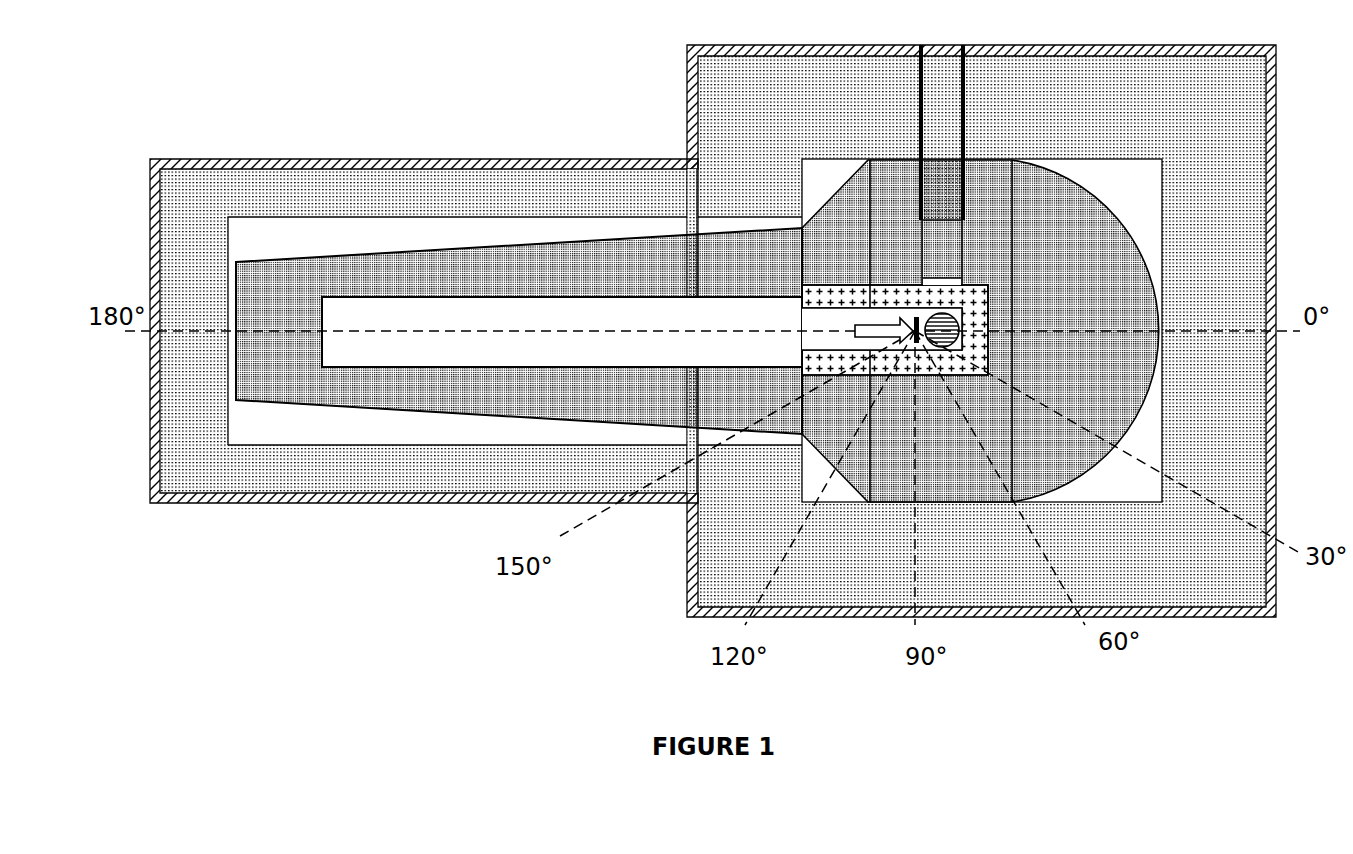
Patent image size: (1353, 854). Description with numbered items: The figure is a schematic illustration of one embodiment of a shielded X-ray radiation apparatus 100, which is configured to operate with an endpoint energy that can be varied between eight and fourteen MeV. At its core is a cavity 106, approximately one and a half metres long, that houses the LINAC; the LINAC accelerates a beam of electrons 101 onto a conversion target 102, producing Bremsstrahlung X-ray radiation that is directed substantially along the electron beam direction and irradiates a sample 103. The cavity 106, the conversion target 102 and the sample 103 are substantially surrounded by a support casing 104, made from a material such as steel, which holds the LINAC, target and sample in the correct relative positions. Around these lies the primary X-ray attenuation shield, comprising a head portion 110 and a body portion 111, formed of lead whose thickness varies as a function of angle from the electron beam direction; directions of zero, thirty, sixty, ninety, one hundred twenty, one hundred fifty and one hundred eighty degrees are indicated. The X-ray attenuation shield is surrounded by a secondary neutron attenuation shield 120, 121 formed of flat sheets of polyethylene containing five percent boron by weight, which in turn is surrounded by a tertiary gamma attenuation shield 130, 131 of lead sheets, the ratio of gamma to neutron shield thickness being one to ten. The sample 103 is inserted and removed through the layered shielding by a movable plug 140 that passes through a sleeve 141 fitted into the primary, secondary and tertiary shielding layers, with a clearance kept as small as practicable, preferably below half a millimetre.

The shielded X-ray radiation apparatus 100 is at (437, 68).
The beam of electrons 101 is at (795, 331).
The conversion target 102 is at (912, 322).
The sample 103 is at (957, 323).
The support casing 104 is at (987, 288).
The cavity 106 is at (562, 332).
The head portion of X-ray attenuation shield 110 is at (980, 331).
The body portion of X-ray attenuation shield 111 is at (519, 331).
The neutron attenuation shield 120 is at (982, 331).
The neutron attenuation shield 121 is at (481, 331).
The gamma attenuation shield 130 is at (686, 110).
The gamma attenuation shield 131 is at (340, 158).
The plug 140 is at (940, 165).
The sleeve 141 is at (915, 192).